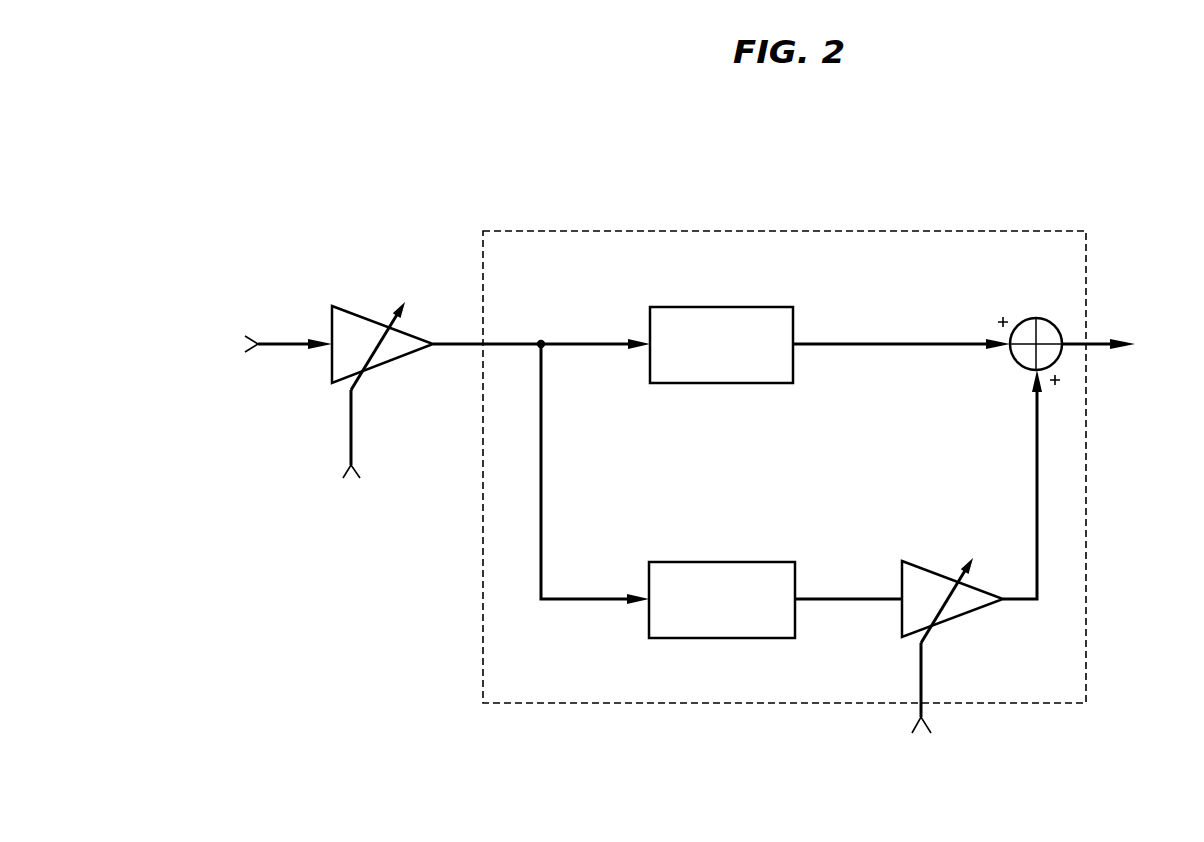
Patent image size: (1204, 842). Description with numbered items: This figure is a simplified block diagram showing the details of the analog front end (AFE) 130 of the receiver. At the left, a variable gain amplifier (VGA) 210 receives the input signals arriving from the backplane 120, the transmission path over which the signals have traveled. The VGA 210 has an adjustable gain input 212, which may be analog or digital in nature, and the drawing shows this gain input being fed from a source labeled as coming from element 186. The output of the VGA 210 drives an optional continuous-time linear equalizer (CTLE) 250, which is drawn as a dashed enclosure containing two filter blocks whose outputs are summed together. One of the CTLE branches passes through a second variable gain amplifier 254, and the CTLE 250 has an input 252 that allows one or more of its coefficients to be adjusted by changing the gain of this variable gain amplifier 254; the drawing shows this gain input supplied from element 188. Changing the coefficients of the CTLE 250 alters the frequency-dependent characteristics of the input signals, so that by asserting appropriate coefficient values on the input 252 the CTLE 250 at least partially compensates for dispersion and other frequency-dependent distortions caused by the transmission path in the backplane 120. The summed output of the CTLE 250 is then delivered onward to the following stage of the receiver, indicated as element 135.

The analog front end 130 is at (804, 114).
The backplane 120 is at (243, 346).
The variable gain amplifier 210 is at (403, 357).
The adjustable gain input 212 is at (350, 405).
The gain control source for VGA 186 is at (353, 486).
The continuous-time linear equalizer 250 is at (783, 230).
The variable gain amplifier 254 is at (968, 615).
The input 252 is at (920, 660).
The gain control source for K amplifier 188 is at (923, 740).
The downstream block (destination of output signal) 135 is at (1132, 345).